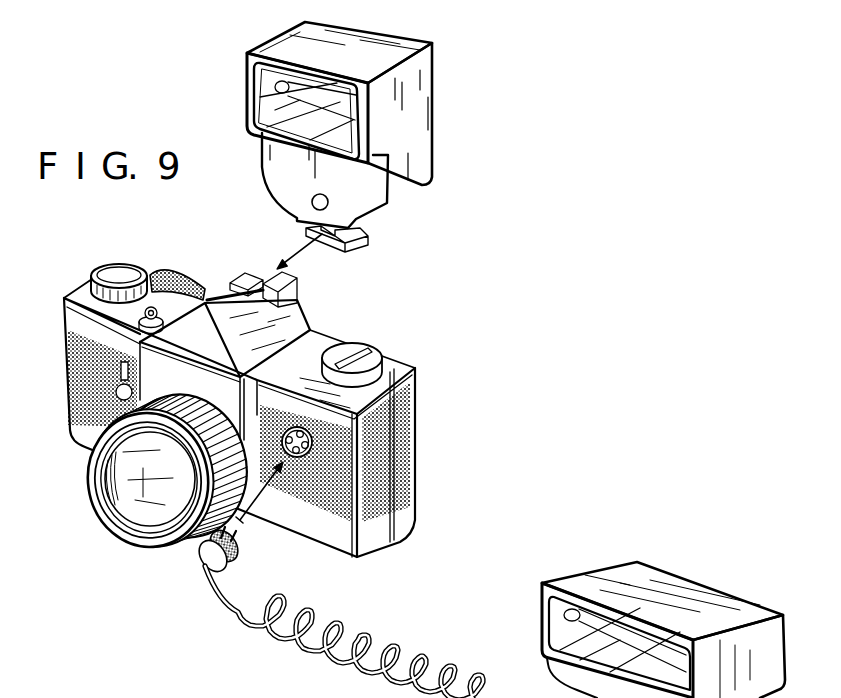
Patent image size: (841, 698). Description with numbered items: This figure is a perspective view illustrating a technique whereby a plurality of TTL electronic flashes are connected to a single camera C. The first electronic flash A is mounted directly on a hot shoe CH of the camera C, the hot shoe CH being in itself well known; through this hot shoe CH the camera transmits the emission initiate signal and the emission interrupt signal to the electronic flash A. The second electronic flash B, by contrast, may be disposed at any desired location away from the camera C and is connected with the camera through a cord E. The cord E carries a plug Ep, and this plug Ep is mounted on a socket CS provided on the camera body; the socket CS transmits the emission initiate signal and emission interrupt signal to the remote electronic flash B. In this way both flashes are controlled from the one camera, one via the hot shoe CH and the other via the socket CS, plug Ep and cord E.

The electronic flash A is at (430, 90).
The electronic flash B is at (720, 598).
The camera C is at (325, 342).
The hot shoe CH is at (246, 278).
The socket CS is at (297, 428).
The plug Ep is at (237, 552).
The cord E is at (433, 669).